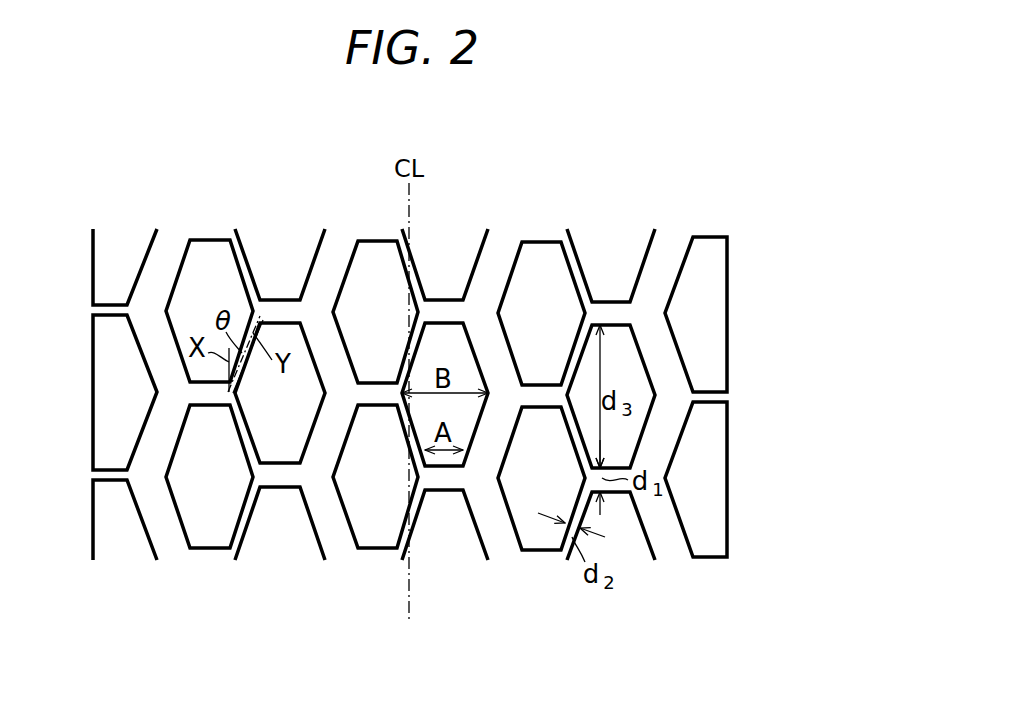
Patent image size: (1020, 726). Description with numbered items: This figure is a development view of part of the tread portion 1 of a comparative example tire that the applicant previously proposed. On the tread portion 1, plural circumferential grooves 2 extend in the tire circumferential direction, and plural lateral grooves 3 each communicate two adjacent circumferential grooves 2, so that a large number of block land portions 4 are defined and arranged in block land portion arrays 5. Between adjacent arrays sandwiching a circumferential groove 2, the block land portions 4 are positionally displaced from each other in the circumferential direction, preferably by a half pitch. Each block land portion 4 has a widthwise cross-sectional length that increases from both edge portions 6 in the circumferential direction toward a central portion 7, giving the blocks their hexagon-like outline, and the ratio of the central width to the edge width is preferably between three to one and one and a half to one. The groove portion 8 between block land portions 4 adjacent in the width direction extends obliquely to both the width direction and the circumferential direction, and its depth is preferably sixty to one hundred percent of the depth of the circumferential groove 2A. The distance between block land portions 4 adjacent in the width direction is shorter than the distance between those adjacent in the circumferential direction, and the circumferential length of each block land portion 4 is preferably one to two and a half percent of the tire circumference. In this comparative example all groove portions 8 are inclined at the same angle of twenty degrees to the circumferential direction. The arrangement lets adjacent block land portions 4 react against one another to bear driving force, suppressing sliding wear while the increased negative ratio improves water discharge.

The tread portion 1 is at (250, 180).
The circumferential groove 2 is at (397, 238).
The circumferential groove 2A is at (493, 262).
The lateral groove 3 is at (445, 312).
The block land portion 4 is at (389, 329).
The block land portion array 5 is at (121, 213).
The edge portion 6 is at (541, 240).
The central portion 7 is at (585, 313).
The groove portion 8 is at (400, 386).